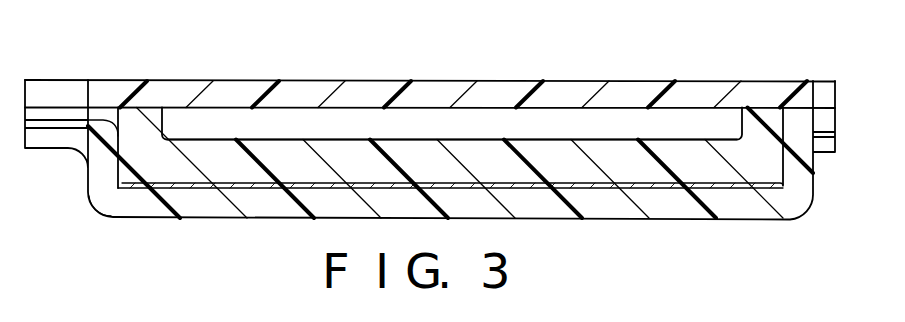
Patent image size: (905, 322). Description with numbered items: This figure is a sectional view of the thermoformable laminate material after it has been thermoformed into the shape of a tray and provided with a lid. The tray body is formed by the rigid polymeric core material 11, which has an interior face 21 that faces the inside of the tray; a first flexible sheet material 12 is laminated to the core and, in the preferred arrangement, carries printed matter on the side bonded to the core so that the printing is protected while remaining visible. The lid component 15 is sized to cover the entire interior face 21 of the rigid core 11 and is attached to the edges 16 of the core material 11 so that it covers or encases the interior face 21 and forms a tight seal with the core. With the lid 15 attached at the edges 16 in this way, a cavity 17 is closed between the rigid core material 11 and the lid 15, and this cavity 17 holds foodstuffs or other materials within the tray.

The rigid polymeric core material 11 is at (446, 140).
The first flexible sheet material 12 is at (796, 200).
The lid component 15 is at (714, 83).
The edges 16 is at (118, 108).
The cavity 17 is at (197, 120).
The interior face 21 is at (423, 142).